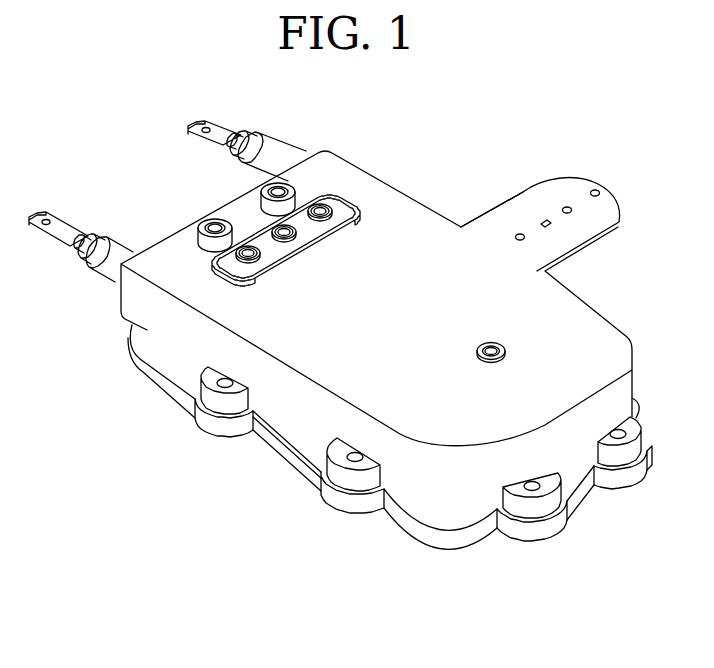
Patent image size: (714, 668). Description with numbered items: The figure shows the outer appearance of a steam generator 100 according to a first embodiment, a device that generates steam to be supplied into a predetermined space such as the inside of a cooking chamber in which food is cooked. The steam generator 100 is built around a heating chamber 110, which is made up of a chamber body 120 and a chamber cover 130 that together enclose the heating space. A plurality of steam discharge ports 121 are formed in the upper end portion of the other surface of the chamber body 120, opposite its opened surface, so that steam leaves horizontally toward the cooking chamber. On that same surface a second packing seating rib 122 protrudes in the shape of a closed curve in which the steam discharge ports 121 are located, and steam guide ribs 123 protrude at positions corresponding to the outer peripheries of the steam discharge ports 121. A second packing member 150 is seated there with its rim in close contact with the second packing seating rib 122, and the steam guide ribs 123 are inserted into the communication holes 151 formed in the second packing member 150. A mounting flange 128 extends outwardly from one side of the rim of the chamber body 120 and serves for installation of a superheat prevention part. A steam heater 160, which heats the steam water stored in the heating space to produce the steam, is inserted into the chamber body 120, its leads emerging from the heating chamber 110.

The steam generator 100 is at (450, 178).
The heating chamber 110 is at (488, 613).
The chamber body 120 is at (430, 490).
The steam discharge ports 121 is at (243, 262).
The second packing seating rib 122 is at (210, 263).
The steam guide ribs 123 is at (248, 245).
The mounting flange 128 is at (612, 211).
The chamber cover 130 is at (473, 527).
The second packing member 150 is at (338, 207).
The communication holes 151 is at (284, 226).
The steam heater 160 is at (110, 272).